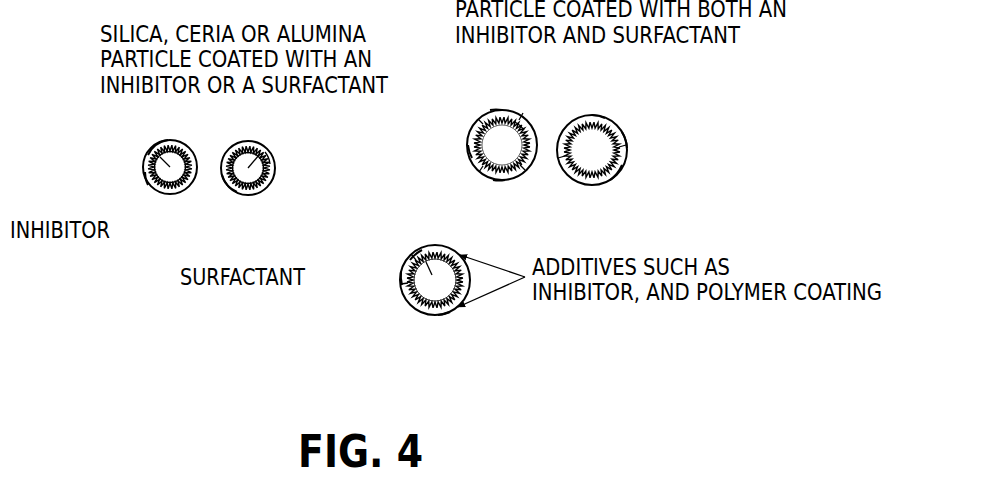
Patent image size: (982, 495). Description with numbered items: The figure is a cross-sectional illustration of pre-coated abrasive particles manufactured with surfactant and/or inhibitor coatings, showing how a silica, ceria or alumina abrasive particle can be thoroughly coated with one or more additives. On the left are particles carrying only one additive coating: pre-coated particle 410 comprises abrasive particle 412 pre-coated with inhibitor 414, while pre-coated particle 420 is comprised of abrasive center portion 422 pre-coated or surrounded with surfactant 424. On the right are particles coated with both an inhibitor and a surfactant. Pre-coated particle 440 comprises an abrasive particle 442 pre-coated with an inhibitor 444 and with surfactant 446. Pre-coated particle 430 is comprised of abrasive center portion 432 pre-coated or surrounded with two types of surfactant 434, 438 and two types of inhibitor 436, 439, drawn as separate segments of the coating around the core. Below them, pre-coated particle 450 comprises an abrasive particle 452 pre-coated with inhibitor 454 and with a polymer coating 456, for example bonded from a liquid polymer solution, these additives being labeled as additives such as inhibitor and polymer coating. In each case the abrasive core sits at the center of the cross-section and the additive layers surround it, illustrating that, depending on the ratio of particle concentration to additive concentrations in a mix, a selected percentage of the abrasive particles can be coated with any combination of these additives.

The pre-coated particle 410 is at (196, 190).
The abrasive particle 412 is at (148, 155).
The inhibitor 414 is at (148, 185).
The pre-coated particle 420 is at (277, 187).
The abrasive center portion 422 is at (265, 152).
The surfactant 424 is at (237, 192).
The pre-coated particle 430 is at (466, 141).
The abrasive center portion 432 is at (517, 150).
The surfactant 434 is at (490, 110).
The inhibitor 436 is at (472, 158).
The surfactant 438 is at (493, 180).
The inhibitor 439 is at (515, 122).
The pre-coated particle 440 is at (609, 191).
The abrasive particle 442 is at (605, 118).
The inhibitor 444 is at (622, 132).
The surfactant 446 is at (622, 165).
The pre-coated particle 450 is at (405, 302).
The abrasive particle 452 is at (410, 260).
The inhibitor 454 is at (402, 285).
The polymer coating 456 is at (438, 315).